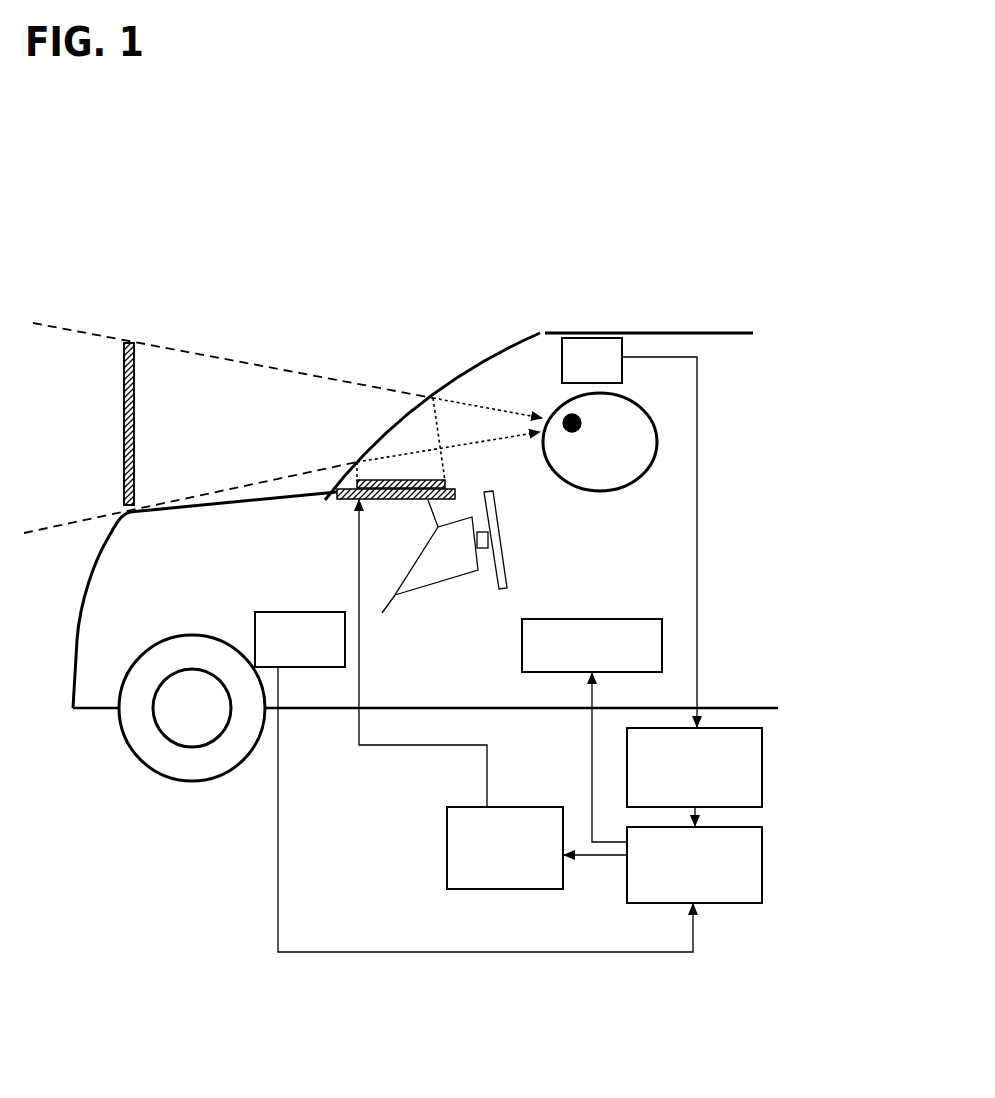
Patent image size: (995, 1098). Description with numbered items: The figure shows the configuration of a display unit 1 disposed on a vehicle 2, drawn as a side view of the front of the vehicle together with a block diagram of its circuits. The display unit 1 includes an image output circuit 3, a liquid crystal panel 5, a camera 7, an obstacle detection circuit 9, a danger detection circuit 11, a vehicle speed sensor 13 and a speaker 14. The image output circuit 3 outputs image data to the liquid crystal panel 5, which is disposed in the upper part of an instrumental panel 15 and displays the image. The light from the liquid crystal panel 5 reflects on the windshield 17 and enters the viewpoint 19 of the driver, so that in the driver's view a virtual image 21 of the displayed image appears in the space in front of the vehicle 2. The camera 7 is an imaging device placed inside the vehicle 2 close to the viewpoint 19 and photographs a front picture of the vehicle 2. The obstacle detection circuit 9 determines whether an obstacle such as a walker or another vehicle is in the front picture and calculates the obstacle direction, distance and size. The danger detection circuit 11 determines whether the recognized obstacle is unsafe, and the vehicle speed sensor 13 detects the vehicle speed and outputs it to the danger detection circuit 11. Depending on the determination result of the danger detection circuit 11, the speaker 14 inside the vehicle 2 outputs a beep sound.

The display unit 1 is at (762, 626).
The vehicle 2 is at (728, 333).
The image output circuit 3 is at (447, 862).
The liquid crystal panel 5 is at (338, 499).
The camera 7 is at (591, 338).
The obstacle detection circuit 9 is at (762, 757).
The danger detection circuit 11 is at (762, 890).
The vehicle speed sensor 13 is at (255, 640).
The speaker 14 is at (630, 619).
The instrumental panel 15 is at (394, 500).
The windshield 17 is at (455, 395).
The viewpoint 19 is at (583, 444).
The virtual image 21 is at (124, 397).